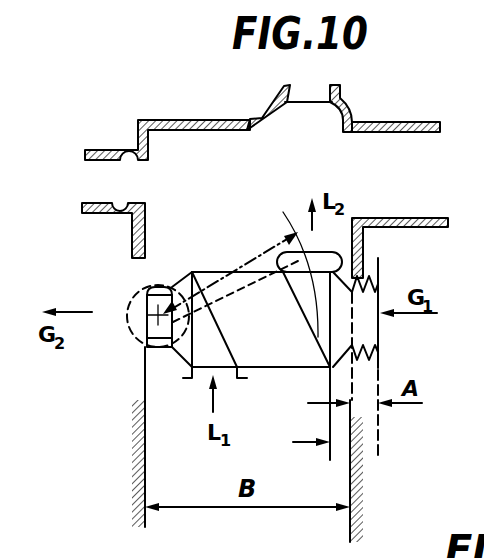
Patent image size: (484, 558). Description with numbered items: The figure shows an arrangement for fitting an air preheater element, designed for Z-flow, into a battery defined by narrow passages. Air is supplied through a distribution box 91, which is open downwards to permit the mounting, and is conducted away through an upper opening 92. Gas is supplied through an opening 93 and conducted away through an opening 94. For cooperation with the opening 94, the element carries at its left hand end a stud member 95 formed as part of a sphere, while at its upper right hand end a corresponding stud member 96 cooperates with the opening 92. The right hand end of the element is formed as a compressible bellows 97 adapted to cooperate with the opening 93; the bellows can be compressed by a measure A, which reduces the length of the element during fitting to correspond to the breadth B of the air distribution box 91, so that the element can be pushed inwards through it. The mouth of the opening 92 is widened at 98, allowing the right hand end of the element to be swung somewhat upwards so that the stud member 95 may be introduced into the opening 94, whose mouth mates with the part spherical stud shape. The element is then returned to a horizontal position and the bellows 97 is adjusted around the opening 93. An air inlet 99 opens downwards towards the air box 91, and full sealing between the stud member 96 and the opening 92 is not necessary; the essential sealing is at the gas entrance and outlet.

The distribution box 91 is at (257, 312).
The upper opening 92 is at (323, 86).
The opening 93 is at (393, 170).
The opening 94 is at (95, 188).
The stud member 95 is at (167, 277).
The stud member 96 is at (335, 262).
The compressible bellows 97 is at (367, 333).
The widened mouth 98 is at (270, 118).
The air inlet 99 is at (208, 368).